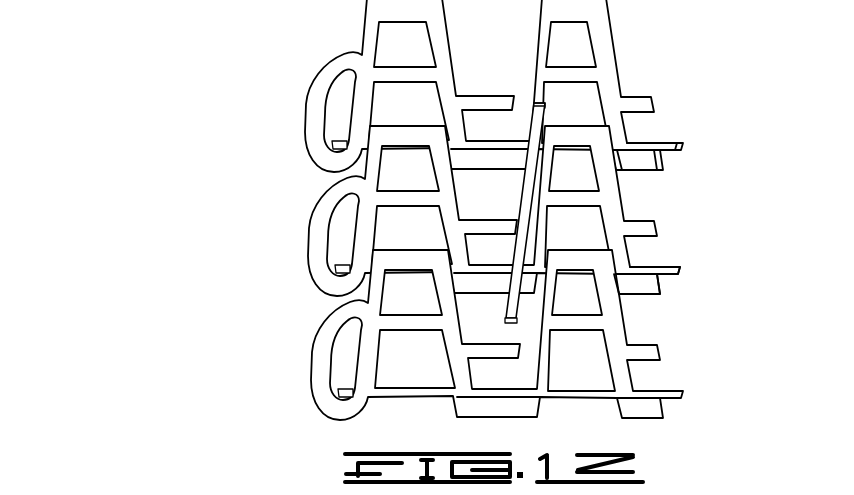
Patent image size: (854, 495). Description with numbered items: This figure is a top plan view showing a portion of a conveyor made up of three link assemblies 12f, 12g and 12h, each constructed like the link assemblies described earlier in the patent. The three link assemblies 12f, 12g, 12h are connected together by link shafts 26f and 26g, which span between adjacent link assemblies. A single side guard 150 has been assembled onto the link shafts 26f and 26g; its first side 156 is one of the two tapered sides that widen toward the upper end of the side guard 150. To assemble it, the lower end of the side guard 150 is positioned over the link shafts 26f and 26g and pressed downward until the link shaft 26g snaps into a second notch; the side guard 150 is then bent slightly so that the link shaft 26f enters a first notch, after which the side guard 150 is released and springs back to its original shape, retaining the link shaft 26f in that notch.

The link assembly 12f is at (329, 63).
The link assembly 12g is at (321, 214).
The link assembly 12h is at (319, 354).
The link shaft 26f is at (663, 139).
The link shaft 26g is at (667, 264).
The side guard 150 is at (517, 253).
The first side 156 is at (546, 109).